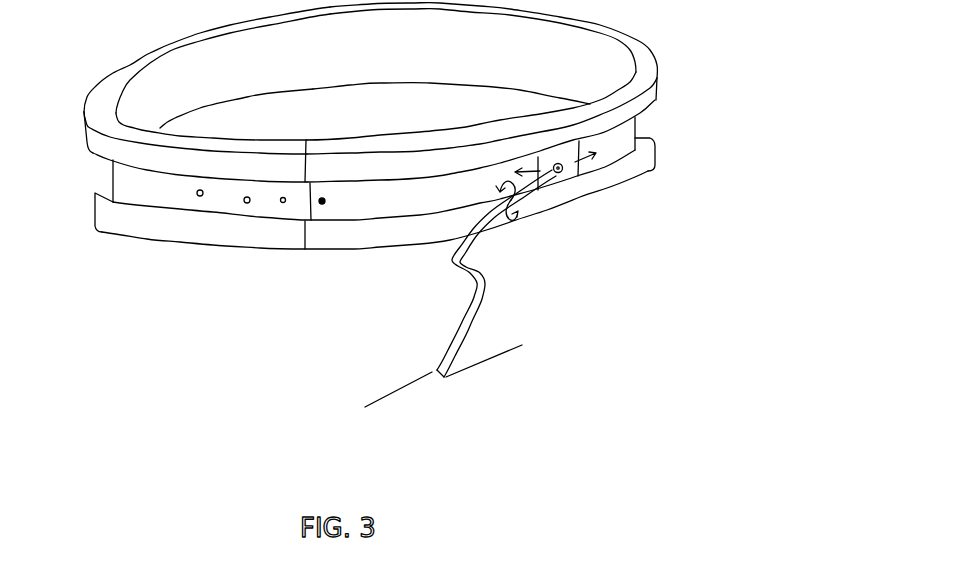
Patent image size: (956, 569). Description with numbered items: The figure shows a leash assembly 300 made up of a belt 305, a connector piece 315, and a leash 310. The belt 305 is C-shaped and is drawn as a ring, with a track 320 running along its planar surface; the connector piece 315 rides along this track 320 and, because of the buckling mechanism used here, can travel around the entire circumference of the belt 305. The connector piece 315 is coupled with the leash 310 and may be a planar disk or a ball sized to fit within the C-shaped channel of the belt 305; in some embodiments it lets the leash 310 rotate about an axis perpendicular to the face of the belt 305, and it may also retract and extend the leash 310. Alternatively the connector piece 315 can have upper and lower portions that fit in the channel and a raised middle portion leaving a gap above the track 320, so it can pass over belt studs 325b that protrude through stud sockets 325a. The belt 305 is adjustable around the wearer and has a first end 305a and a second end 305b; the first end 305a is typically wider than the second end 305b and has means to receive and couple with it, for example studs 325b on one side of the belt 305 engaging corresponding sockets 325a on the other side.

The leash assembly 300 is at (332, 220).
The belt 305 is at (370, 126).
The first end 305a is at (296, 180).
The second end 305b is at (356, 180).
The leash 310 is at (484, 293).
The connector piece 315 is at (563, 171).
The track 320 is at (374, 217).
The stud sockets 325a is at (247, 204).
The belt studs 325b is at (322, 205).